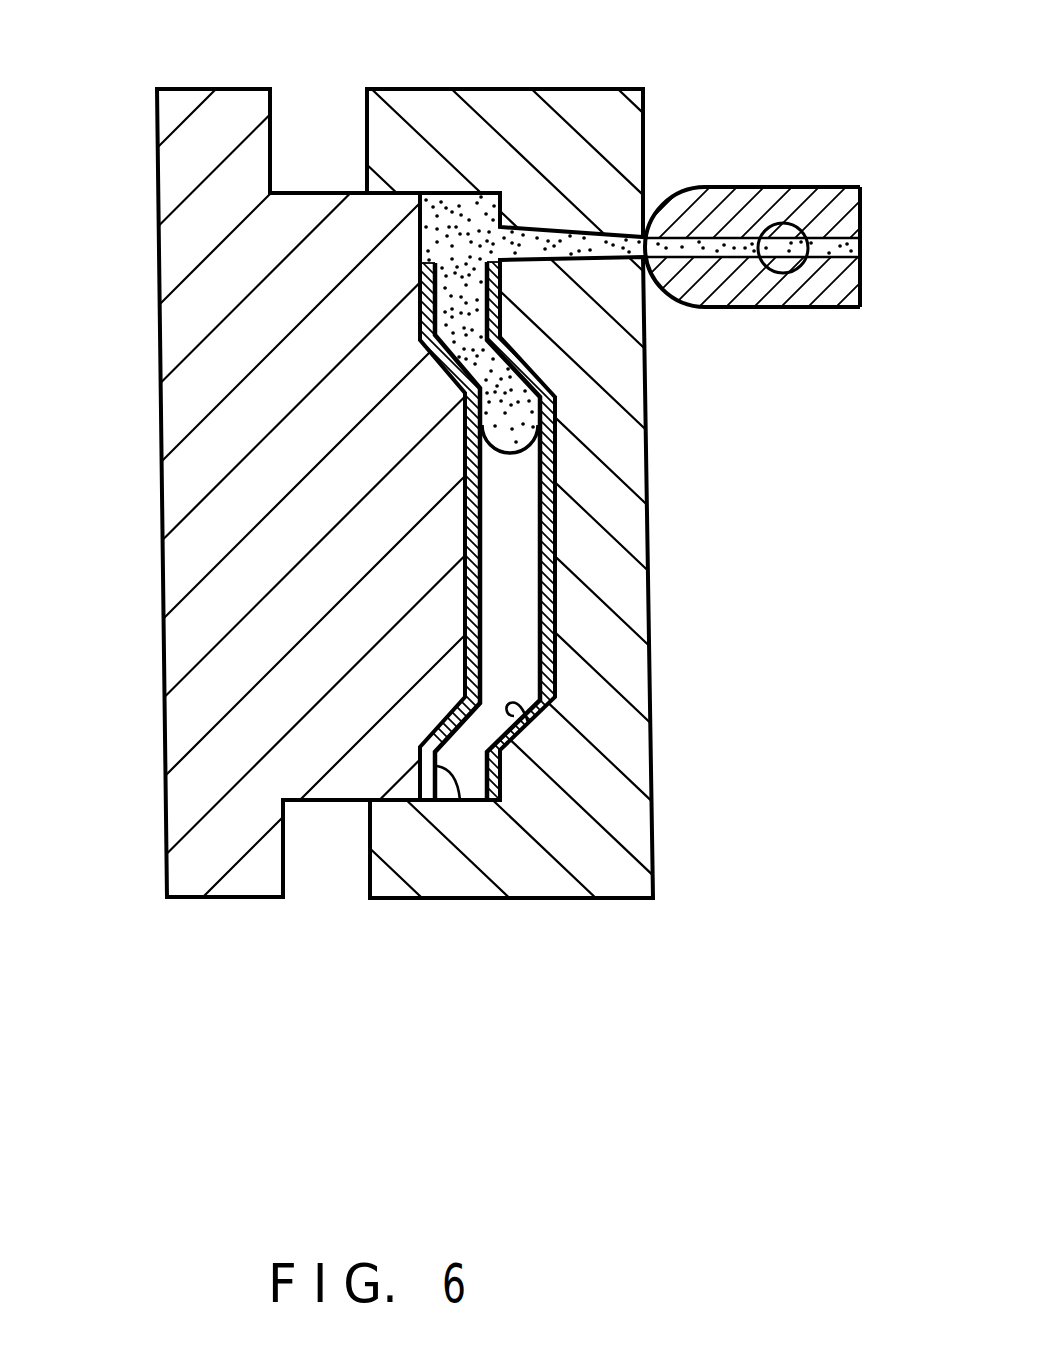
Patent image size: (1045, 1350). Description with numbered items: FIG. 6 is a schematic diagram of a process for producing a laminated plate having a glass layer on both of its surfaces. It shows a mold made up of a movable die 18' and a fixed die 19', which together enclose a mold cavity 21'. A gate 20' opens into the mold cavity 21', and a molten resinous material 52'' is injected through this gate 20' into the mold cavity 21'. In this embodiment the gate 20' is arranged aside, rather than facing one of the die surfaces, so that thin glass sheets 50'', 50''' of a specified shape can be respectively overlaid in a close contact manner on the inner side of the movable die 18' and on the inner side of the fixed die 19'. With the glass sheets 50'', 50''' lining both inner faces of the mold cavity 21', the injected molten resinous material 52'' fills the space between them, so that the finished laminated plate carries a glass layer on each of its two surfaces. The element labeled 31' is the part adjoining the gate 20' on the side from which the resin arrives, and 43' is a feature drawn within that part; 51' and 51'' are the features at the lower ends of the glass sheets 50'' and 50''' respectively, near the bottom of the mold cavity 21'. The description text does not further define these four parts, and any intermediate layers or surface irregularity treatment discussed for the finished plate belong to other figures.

The movable die 18' is at (522, 675).
The gate 20' is at (350, 581).
The fixed die 19' is at (381, 581).
The mold cavity 21' is at (603, 530).
The injection nozzle 31' is at (522, 675).
The nozzle gate opening 43' is at (795, 325).
The thin glass sheet 50'' is at (300, 450).
The thin glass sheet 50''' is at (400, 450).
The lower end of first insert 51' is at (449, 882).
The lower end of second insert 51'' is at (580, 844).
The molten resinous material 52'' is at (638, 331).